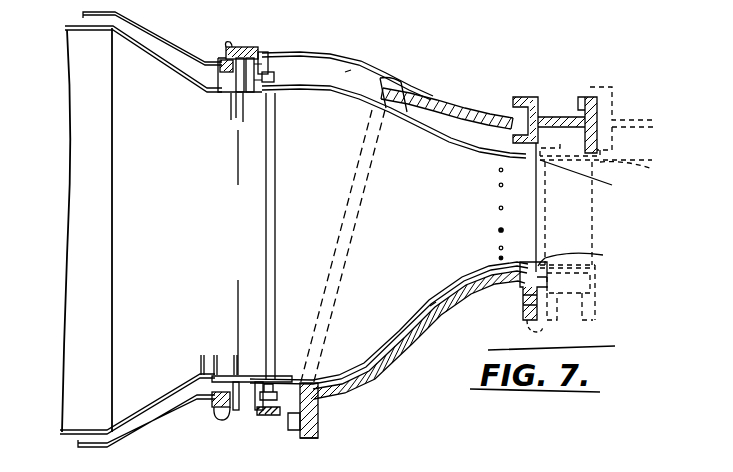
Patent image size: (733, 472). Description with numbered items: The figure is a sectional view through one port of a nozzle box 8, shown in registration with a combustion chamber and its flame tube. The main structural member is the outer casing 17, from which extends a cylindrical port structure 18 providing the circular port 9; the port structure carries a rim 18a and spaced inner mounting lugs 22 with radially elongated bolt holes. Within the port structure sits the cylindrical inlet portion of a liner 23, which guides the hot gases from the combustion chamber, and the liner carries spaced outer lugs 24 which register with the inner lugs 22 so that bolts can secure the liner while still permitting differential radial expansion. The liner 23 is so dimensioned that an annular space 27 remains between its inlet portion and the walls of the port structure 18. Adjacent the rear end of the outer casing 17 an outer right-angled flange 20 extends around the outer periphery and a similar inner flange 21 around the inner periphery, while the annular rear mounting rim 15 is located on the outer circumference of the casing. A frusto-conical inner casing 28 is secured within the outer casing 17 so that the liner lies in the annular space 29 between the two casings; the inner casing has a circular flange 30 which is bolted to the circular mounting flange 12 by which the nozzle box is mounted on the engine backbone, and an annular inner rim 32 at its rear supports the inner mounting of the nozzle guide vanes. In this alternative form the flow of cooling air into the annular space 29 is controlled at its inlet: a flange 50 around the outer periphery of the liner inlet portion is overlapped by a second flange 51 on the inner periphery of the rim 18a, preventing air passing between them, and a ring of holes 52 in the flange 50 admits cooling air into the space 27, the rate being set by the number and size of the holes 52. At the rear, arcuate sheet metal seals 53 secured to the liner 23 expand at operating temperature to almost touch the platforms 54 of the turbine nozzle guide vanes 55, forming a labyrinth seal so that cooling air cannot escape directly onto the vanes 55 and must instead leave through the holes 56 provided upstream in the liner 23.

The nozzle box circular assembly 8 is at (458, 48).
The circular port 9 is at (200, 218).
The circular mounting flange 12 is at (304, 440).
The annular rear mounting rim 15 is at (602, 90).
The outer casing 17 is at (448, 100).
The cylindrical port structure 18 is at (318, 56).
The rim 18a is at (232, 44).
The outer right-angled flange 20 is at (541, 100).
The inner flange 21 is at (542, 123).
The inner mounting lug 22 is at (237, 93).
The liner 23 is at (397, 95).
The outer lug 24 is at (275, 55).
The annular space 27 is at (348, 72).
The frusto-conical inner casing 28 is at (387, 350).
The annular space 29 is at (478, 110).
The circular flange 30 is at (320, 410).
The annular inner rim 32 is at (528, 293).
The flange 50 is at (246, 378).
The second flange 51 is at (226, 420).
The holes 52 is at (272, 415).
The arcuate sheet metal seal 53 is at (587, 240).
The platform 54 is at (634, 170).
The turbine nozzle guide vane 55 is at (585, 228).
The holes 56 is at (499, 229).